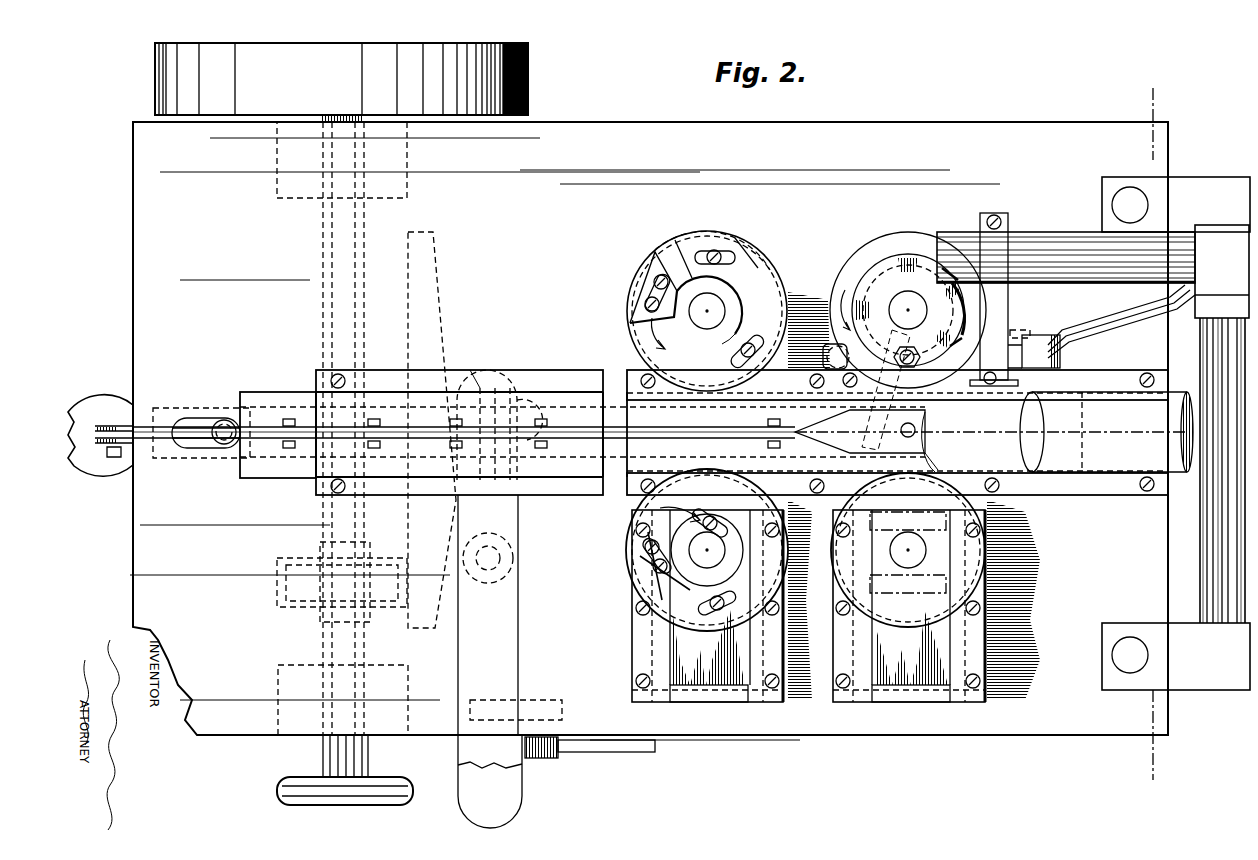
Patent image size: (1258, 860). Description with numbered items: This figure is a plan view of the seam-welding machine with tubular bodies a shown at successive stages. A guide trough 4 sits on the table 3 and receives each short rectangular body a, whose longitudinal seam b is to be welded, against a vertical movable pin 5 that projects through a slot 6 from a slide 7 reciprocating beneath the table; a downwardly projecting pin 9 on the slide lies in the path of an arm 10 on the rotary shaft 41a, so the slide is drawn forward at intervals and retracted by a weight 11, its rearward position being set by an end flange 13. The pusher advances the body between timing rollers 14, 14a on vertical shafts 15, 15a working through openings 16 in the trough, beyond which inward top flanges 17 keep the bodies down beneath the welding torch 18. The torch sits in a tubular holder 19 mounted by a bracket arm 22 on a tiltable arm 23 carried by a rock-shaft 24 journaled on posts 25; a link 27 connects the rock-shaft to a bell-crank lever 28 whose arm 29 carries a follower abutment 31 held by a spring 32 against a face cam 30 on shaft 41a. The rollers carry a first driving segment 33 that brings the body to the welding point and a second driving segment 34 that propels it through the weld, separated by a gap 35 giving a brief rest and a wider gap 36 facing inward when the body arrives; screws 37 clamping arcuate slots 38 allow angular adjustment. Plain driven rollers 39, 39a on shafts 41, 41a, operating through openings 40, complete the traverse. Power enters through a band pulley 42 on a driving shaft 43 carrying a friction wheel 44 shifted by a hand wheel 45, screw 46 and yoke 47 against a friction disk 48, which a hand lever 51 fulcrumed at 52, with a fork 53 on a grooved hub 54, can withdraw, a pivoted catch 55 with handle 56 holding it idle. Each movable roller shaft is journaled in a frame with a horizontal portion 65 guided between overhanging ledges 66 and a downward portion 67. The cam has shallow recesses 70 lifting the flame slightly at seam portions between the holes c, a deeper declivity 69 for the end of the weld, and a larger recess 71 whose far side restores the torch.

The table 3 is at (866, 436).
The guide trough 4 is at (510, 370).
The movable pin 5 is at (222, 420).
The slot 6 is at (198, 448).
The slide 7 is at (278, 478).
The downwardly projecting pin 9 is at (914, 436).
The arm 10 is at (932, 415).
The weight 11 is at (92, 470).
The end flange 13 is at (153, 458).
The roller 14 is at (640, 505).
The roller 14a is at (625, 340).
The vertical shaft 15 is at (702, 552).
The vertical shaft 15a is at (713, 303).
The openings 16 is at (655, 400).
The top flanges 17 is at (760, 400).
The welding torch 18 is at (1060, 460).
The tubular holder 19 is at (1010, 468).
The bracket arm 22 is at (1010, 305).
The tiltable arm 23 is at (1058, 238).
The rock-shaft 24 is at (1195, 545).
The posts 25 is at (1130, 190).
The link 27 is at (1135, 320).
The bell-crank lever 28 is at (1050, 325).
The arm 29 is at (835, 345).
The face cam 30 is at (880, 262).
The follower abutment 31 is at (920, 357).
The spring 32 is at (798, 300).
The first driving segment 33 is at (632, 278).
The second driving segment 34 is at (725, 232).
The gap 35 is at (665, 243).
The gap 36 is at (628, 357).
The screws 37 is at (712, 248).
The arcuate slots 38 is at (655, 275).
The driven roller 39 is at (985, 578).
The driven roller 39a is at (906, 252).
The openings 40 is at (880, 382).
The vertical shaft 41 is at (822, 570).
The vertical shaft 41a is at (905, 305).
The band pulley 42 is at (530, 75).
The driving shaft 43 is at (362, 203).
The friction wheel 44 is at (275, 585).
The hand wheel 45 is at (282, 780).
The screw 46 is at (370, 650).
The yoke 47 is at (318, 614).
The friction disk 48 is at (405, 278).
The hand lever 51 is at (522, 784).
The fulcrum 52 is at (494, 568).
The fork 53 is at (518, 478).
The grooved hub 54 is at (472, 362).
The pivoted catch 55 is at (525, 700).
The handle 56 is at (630, 752).
The horizontal upper portion 65 is at (708, 685).
The overhanging ledges 66 is at (632, 700).
The downwardly extending portion 67 is at (1040, 610).
The declivity 69 is at (950, 318).
The cam regions 70 is at (920, 262).
The larger recess 71 is at (850, 304).
The tubular body a is at (244, 478).
The longitudinal seam b is at (385, 420).
The openings c is at (548, 424).